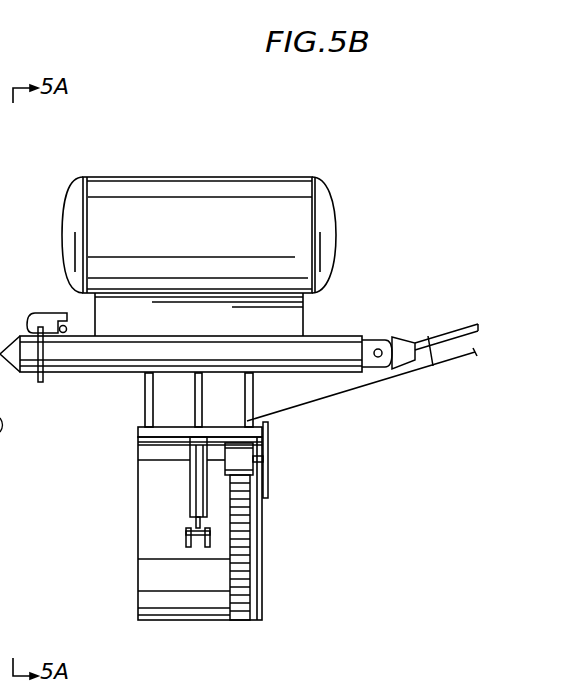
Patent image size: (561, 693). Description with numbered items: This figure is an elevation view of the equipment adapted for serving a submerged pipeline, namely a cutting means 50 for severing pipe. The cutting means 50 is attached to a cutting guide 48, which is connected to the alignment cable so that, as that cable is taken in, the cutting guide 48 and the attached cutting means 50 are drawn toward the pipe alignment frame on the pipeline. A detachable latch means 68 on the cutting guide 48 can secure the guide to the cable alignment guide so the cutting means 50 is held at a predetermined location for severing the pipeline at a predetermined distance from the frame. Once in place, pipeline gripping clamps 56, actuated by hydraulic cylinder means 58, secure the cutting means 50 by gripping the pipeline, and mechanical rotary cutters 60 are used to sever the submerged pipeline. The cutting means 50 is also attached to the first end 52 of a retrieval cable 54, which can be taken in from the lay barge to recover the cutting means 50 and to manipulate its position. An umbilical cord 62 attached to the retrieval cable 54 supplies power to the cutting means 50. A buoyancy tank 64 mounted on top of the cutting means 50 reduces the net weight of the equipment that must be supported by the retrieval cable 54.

The cutting guide 48 is at (65, 376).
The cutting means 50 is at (138, 546).
The first end of retrieval cable 52 is at (425, 333).
The retrieval cable 54 is at (438, 336).
The pipeline gripping clamps 56 is at (216, 536).
The hydraulic cylinder means 58 is at (203, 507).
The mechanical rotary cutters 60 is at (270, 463).
The umbilical cord 62 is at (453, 362).
The buoyancy tank 64 is at (197, 177).
The detachable latch means 68 is at (40, 313).